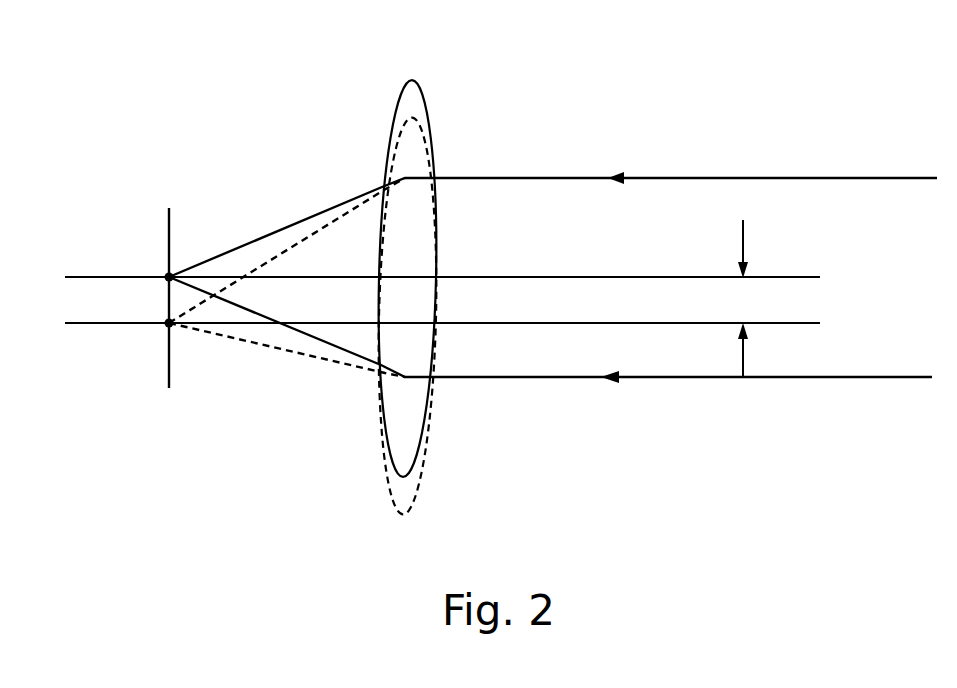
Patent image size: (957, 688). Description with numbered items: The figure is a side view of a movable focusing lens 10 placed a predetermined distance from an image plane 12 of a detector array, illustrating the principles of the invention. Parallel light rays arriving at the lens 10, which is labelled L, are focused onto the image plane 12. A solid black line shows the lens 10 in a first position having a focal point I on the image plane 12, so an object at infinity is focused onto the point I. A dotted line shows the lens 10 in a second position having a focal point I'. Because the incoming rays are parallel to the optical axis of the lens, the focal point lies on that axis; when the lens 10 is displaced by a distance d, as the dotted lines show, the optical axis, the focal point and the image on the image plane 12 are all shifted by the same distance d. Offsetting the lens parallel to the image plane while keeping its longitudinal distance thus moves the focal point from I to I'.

The movable focusing lens 10 is at (461, 270).
The image plane 12 is at (111, 330).
The lens L is at (408, 272).
The focal point I is at (157, 257).
The focal point I' is at (156, 343).
The distance d is at (741, 298).